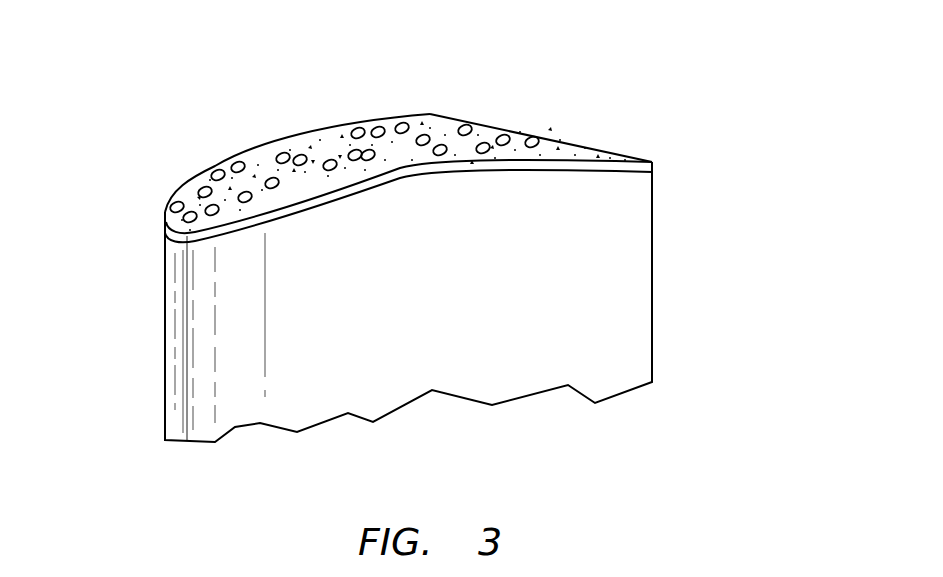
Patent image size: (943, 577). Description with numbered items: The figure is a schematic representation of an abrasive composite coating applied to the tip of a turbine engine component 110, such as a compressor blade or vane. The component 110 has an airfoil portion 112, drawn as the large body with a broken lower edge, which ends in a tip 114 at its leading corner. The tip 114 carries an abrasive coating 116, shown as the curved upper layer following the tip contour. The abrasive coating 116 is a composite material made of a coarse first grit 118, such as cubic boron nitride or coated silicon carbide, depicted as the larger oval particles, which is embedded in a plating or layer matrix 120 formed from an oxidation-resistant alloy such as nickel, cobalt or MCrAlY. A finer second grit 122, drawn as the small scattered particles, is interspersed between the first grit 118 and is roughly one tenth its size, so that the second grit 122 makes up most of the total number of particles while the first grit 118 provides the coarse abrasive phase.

The turbine engine component 110 is at (422, 238).
The airfoil portion 112 is at (407, 292).
The tip 114 is at (163, 207).
The abrasive coating 116 is at (434, 120).
The first grit 118 is at (270, 178).
The matrix 120 is at (563, 133).
The second grit 122 is at (331, 147).